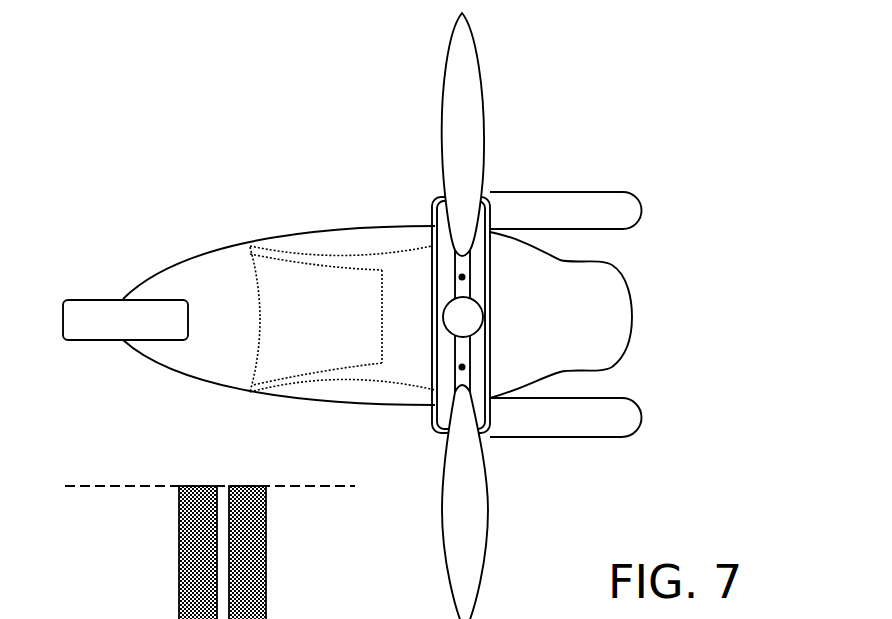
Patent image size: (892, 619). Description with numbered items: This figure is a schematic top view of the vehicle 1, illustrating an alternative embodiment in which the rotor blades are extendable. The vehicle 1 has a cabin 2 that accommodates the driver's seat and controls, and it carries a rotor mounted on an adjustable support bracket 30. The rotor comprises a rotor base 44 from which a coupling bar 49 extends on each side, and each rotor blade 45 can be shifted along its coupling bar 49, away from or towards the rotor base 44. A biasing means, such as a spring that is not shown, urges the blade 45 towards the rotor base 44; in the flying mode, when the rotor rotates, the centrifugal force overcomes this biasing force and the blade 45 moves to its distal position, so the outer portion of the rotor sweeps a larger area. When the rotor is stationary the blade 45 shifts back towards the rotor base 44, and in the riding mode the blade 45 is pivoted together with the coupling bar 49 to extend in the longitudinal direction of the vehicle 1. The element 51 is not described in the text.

The vehicle 1 is at (265, 115).
The cabin 2 is at (217, 250).
The support bracket 30 is at (435, 249).
The rotor base 44 is at (469, 318).
The rotor blade 45 is at (470, 90).
The coupling bar 49 is at (462, 277).
The landing support 51 is at (210, 552).